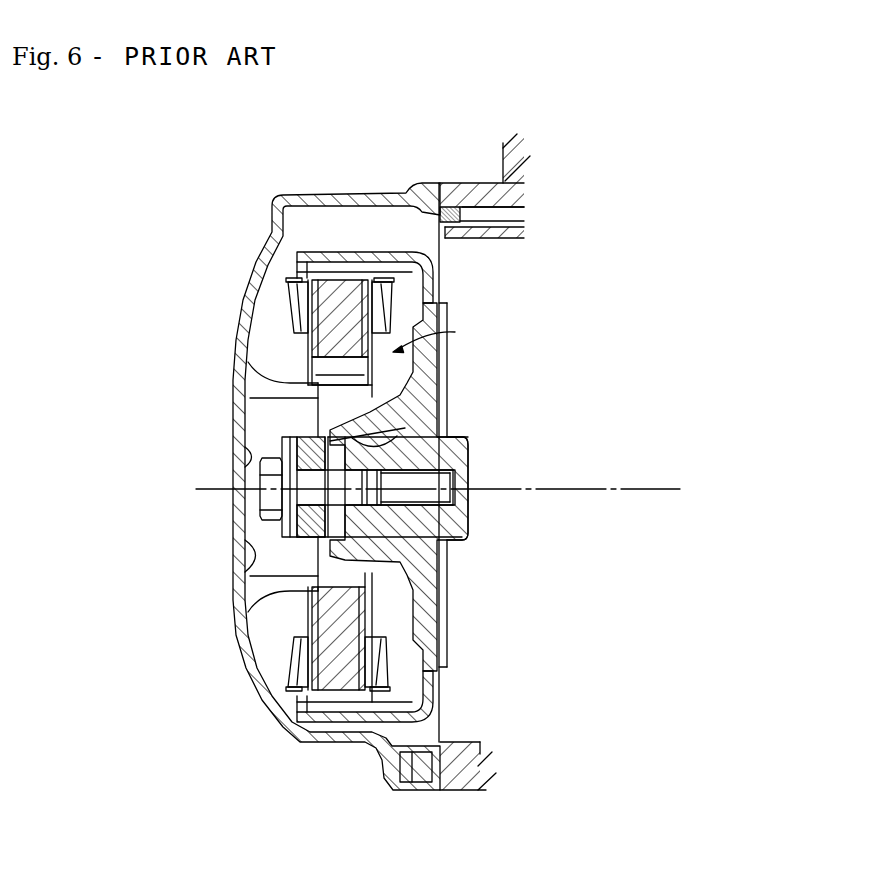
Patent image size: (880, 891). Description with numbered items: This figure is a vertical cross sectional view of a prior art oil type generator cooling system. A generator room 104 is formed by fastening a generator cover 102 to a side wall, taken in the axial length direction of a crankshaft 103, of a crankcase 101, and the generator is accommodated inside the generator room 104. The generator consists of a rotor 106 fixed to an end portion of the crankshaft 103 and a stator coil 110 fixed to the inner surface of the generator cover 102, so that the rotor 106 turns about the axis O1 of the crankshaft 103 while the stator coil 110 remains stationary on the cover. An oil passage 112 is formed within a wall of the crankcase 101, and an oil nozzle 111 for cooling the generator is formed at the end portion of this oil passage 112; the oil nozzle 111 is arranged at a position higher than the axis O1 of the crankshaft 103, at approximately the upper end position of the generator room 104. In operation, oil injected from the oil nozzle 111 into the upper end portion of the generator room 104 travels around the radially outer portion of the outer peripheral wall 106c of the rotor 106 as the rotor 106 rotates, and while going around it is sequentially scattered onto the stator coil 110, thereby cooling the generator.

The crankcase 101 is at (520, 202).
The generator cover 102 is at (221, 490).
The crankshaft 103 is at (463, 538).
The generator room 104 is at (273, 652).
The rotor 106 is at (457, 400).
The outer peripheral wall 106c is at (399, 250).
The stator coil 110 is at (288, 302).
The oil nozzle 111 is at (437, 205).
The oil passage 112 is at (515, 215).
The axis O1 is at (651, 492).